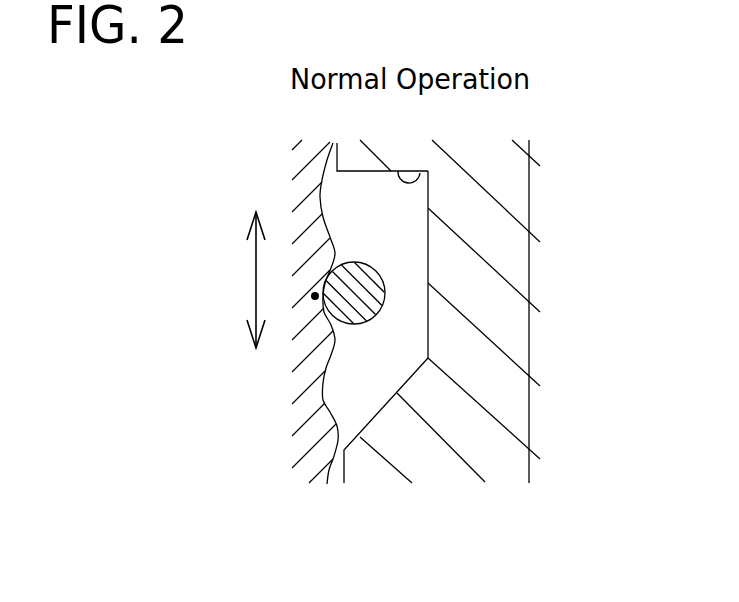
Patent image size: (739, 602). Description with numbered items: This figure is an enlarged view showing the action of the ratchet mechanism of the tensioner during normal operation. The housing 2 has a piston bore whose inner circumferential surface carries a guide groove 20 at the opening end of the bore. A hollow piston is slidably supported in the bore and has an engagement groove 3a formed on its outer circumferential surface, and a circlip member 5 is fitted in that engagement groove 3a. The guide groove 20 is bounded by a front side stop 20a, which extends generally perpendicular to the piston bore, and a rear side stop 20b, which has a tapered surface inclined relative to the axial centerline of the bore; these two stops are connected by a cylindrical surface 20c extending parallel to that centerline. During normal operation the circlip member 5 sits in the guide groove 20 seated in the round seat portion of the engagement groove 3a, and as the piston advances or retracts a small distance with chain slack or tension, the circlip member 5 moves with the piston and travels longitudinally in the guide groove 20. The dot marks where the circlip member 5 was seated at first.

The housing 2 is at (507, 467).
The engagement groove 3a is at (325, 382).
The circlip member 5 is at (395, 290).
The guide groove 20 is at (418, 343).
The front side stop 20a is at (428, 176).
The rear side stop 20b is at (407, 392).
The cylindrical surface 20c is at (426, 256).